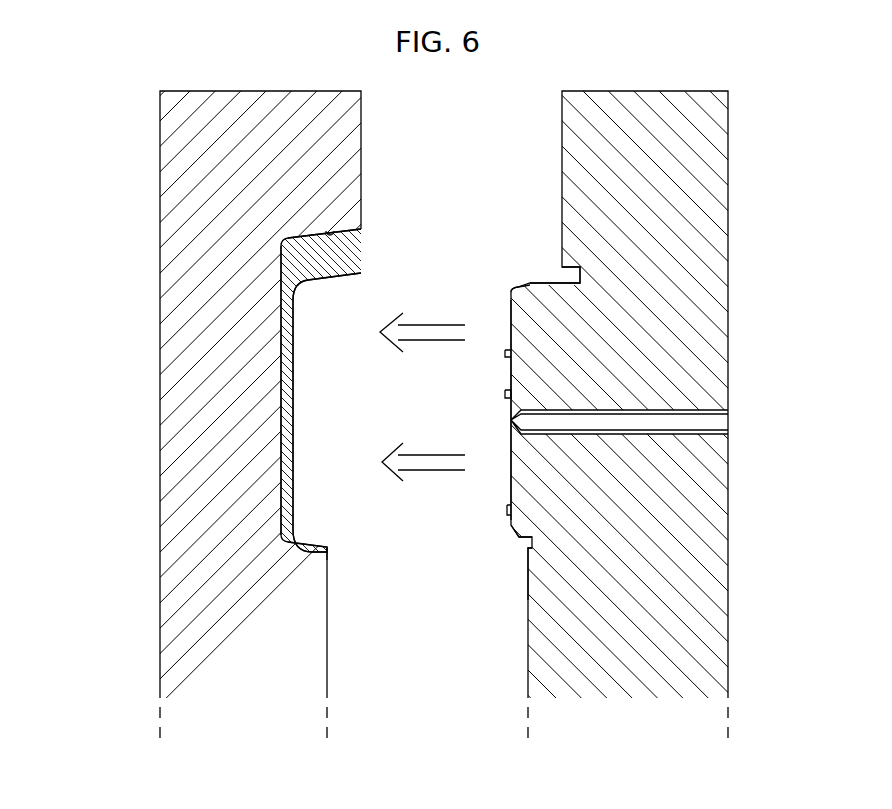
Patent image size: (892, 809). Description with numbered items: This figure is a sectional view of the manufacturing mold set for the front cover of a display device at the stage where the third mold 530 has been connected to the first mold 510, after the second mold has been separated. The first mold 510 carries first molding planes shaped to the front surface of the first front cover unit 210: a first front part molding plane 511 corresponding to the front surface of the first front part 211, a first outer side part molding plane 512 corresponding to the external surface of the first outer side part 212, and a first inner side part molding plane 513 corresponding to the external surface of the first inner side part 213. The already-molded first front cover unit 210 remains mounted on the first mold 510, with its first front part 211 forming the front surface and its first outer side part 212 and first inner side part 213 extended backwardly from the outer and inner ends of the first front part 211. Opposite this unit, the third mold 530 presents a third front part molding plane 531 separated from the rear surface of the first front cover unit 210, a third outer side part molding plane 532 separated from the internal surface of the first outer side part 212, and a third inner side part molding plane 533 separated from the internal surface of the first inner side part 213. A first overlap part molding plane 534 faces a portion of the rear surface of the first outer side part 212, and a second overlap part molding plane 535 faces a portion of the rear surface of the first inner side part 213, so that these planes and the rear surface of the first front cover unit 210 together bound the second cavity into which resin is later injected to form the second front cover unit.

The first mold 510 is at (160, 235).
The first front part molding plane 511 is at (281, 335).
The first outer side part molding plane 512 is at (345, 232).
The first inner side part molding plane 513 is at (318, 549).
The first front cover unit 210 is at (294, 411).
The first front part 211 is at (293, 443).
The first outer side part 212 is at (329, 271).
The first inner side part 213 is at (318, 542).
The third mold 530 is at (730, 264).
The third front part molding plane 531 is at (510, 376).
The third outer side part molding plane 532 is at (530, 284).
The third inner side part molding plane 533 is at (523, 537).
The first overlap part molding plane 534 is at (563, 272).
The second overlap part molding plane 535 is at (528, 548).